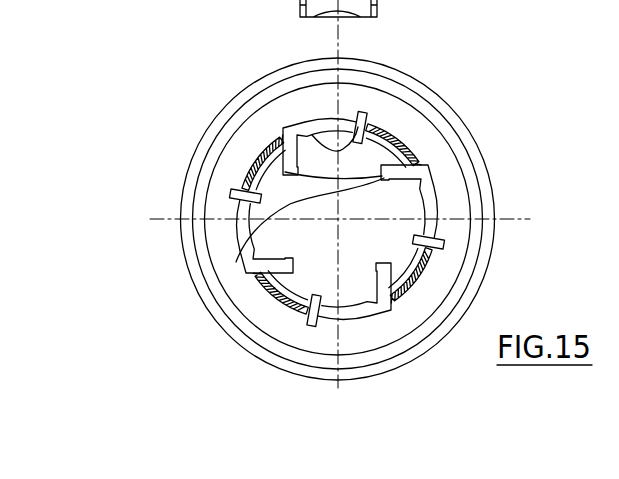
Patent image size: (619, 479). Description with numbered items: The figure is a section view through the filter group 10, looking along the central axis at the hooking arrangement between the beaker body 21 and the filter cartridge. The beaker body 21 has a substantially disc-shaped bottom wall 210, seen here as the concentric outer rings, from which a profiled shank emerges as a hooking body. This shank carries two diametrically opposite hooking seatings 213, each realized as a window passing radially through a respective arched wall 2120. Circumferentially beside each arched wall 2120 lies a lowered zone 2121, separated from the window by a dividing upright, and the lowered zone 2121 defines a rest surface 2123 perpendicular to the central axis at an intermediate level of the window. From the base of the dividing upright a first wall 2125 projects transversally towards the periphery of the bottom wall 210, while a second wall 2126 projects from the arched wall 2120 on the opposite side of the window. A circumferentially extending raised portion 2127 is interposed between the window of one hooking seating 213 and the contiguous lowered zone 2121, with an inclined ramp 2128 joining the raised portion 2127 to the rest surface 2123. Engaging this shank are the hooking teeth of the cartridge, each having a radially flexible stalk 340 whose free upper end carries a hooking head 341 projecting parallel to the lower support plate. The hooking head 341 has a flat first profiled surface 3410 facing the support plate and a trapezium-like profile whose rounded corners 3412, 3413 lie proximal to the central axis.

The filter group 10 is at (110, 93).
The beaker body 21 is at (528, 0).
The bottom wall 210 is at (455, 0).
The hooking seating 213 is at (238, 0).
The arched wall 2120 is at (236, 262).
The lowered zone 2121 is at (468, 166).
The rest surface 2123 is at (439, 170).
The first wall 2125 is at (437, 178).
The second wall 2126 is at (388, 140).
The raised portion 2127 is at (446, 228).
The inclined ramp 2128 is at (441, 205).
The stalk 340 is at (438, 163).
The hooking head 341 is at (396, 136).
The first profiled surface 3410 is at (335, 226).
The corner 3412 is at (282, 163).
The corner 3413 is at (312, 135).